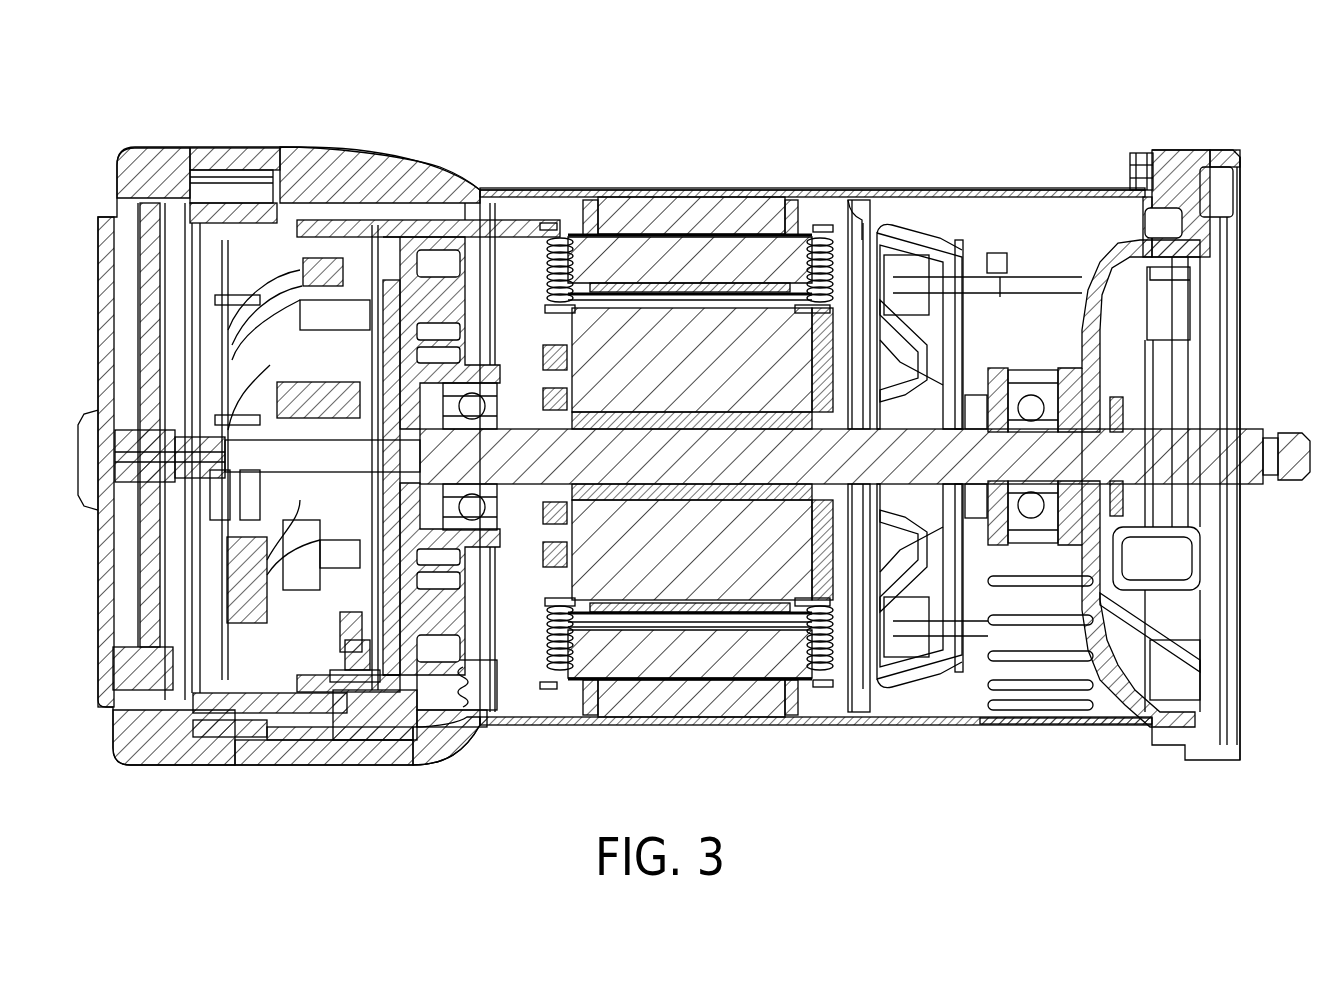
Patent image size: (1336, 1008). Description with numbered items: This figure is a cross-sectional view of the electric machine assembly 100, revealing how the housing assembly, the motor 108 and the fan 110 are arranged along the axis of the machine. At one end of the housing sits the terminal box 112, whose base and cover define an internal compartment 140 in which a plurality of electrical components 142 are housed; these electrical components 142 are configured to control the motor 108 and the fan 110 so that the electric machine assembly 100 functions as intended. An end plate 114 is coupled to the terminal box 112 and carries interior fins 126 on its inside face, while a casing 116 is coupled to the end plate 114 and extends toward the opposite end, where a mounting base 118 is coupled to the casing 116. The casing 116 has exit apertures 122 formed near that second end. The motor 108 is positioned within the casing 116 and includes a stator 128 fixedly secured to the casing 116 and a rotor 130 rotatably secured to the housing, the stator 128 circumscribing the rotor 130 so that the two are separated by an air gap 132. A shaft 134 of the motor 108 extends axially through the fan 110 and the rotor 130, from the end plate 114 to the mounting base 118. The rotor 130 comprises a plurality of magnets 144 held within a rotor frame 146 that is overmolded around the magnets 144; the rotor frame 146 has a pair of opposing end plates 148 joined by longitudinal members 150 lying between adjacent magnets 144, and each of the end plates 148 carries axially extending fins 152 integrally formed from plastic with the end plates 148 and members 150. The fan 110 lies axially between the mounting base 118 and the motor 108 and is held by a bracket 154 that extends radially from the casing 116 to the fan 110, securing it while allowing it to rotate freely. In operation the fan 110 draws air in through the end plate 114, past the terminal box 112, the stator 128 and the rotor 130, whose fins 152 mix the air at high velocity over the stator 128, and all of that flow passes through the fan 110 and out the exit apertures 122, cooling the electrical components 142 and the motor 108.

The electric machine assembly 100 is at (582, 160).
The motor 108 is at (823, 120).
The fan 110 is at (922, 520).
The terminal box 112 is at (387, 677).
The end plate 114 is at (476, 728).
The casing 116 is at (1110, 727).
The mounting base 118 is at (1237, 745).
The exit apertures 122 is at (1073, 647).
The interior fins 126 is at (433, 242).
The stator 128 is at (585, 680).
The rotor 130 is at (880, 505).
The air gap 132 is at (707, 625).
The shaft 134 is at (893, 427).
The internal compartment 140 is at (320, 677).
The electrical components 142 is at (377, 663).
The magnets 144 is at (635, 545).
The rotor frame 146 is at (672, 610).
The end plates 148 is at (540, 250).
The longitudinal members 150 is at (652, 370).
The axially extending fins 152 is at (530, 525).
The bracket 154 is at (850, 600).